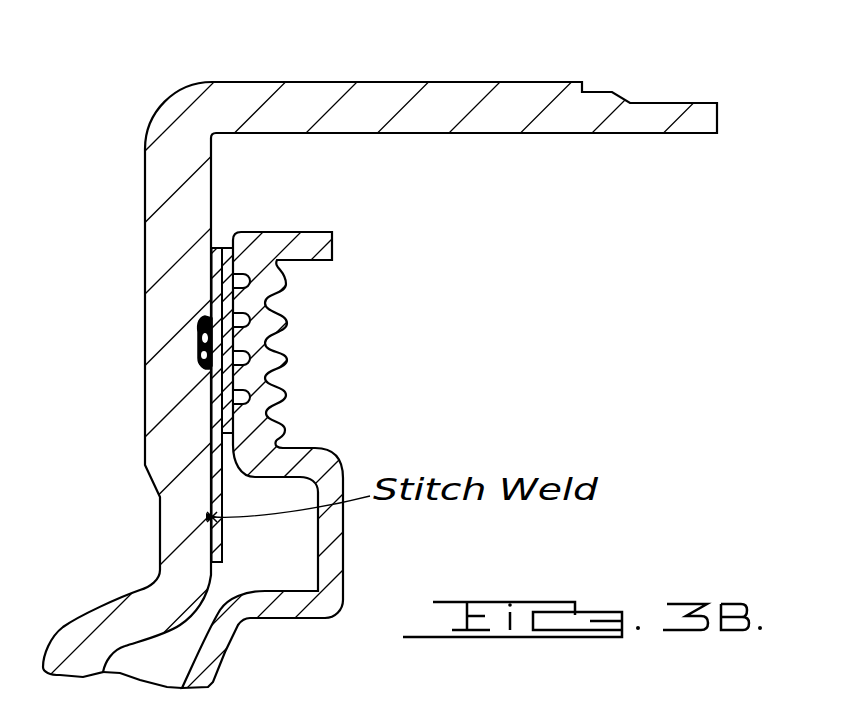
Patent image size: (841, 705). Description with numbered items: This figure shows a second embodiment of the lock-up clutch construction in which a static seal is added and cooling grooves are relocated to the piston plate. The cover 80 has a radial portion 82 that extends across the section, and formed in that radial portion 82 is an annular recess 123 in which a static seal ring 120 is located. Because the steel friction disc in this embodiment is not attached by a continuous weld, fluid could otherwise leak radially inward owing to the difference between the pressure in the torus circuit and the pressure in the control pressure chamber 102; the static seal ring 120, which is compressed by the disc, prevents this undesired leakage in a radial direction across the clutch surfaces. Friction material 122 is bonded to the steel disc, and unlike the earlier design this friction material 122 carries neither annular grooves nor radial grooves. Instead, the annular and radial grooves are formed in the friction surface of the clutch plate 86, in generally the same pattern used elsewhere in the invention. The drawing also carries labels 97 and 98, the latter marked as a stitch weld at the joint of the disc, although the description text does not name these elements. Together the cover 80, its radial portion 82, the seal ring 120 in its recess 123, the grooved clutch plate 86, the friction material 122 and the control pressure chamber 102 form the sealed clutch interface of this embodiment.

The cover 80 is at (293, 95).
The radial portion of the cover 82 is at (163, 207).
The clutch plate 86 is at (338, 542).
The plate 97 is at (221, 476).
The weld 98 is at (210, 517).
The control pressure chamber 102 is at (420, 352).
The static seal ring 120 is at (207, 337).
The friction material 122 is at (245, 338).
The annular recess 123 is at (210, 368).